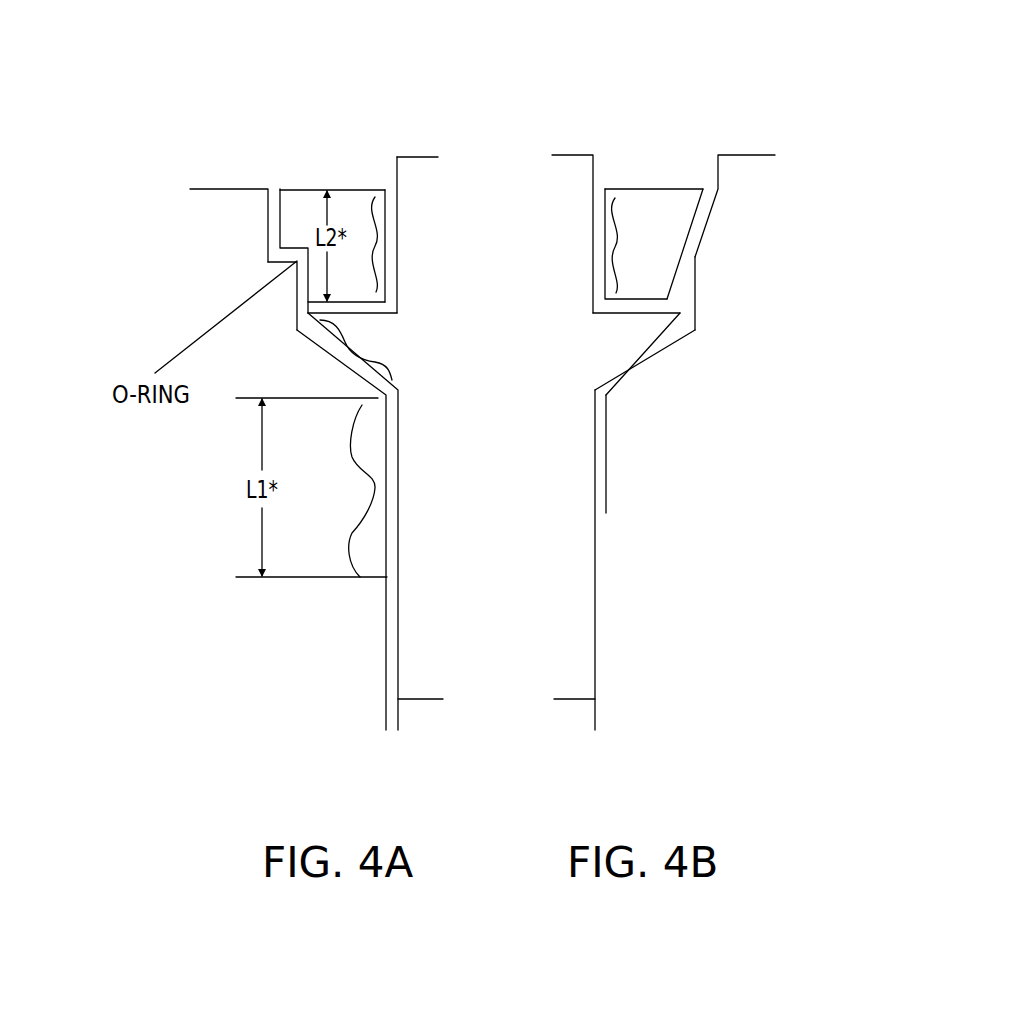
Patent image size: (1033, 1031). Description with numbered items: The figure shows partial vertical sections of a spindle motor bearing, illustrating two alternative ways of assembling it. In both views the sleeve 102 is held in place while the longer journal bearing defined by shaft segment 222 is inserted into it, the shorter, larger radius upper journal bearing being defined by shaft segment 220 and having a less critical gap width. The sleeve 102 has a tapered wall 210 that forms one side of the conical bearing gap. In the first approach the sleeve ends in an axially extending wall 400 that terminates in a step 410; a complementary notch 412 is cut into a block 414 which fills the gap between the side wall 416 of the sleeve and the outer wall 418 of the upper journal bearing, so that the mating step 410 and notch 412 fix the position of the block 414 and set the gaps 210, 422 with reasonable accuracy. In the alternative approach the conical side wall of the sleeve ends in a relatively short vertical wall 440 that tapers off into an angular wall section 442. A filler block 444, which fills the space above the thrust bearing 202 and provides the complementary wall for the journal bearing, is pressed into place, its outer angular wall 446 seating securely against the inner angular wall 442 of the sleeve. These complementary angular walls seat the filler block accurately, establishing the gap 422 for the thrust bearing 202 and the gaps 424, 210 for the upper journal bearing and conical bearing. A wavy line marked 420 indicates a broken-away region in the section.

In FIG. 4A, the sleeve 102 is at (309, 518).
In FIG. 4B, the sleeve 102 is at (672, 557).
In FIG. 4A, the thrust bearing 202 is at (440, 378).
In FIG. 4B, the thrust bearing 202 is at (579, 368).
In FIG. 4A, the tapered wall 210 is at (300, 337).
In FIG. 4B, the tapered wall 210 is at (647, 363).
In FIG. 4A, the shaft segment 220 is at (453, 173).
In FIG. 4A, the shaft segment 222 is at (457, 681).
In FIG. 4A, the axially extending wall 400 is at (295, 293).
In FIG. 4A, the step 410 is at (295, 262).
In FIG. 4A, the complementary notch 412 is at (293, 250).
In FIG. 4A, the block 414 is at (342, 203).
In FIG. 4A, the side wall 416 is at (263, 223).
In FIG. 4A, the outer wall 418 is at (397, 203).
In FIG. 4A, the groove side wall 420 is at (388, 250).
In FIG. 4A, the gap 422 is at (378, 308).
In FIG. 4B, the gap 422 is at (605, 324).
In FIG. 4A, the gap 424 is at (397, 240).
In FIG. 4B, the gap 424 is at (597, 223).
In FIG. 4B, the vertical wall 440 is at (695, 293).
In FIG. 4B, the angular wall section 442 is at (705, 225).
In FIG. 4B, the filler block 444 is at (632, 200).
In FIG. 4B, the outer angular wall 446 is at (685, 240).